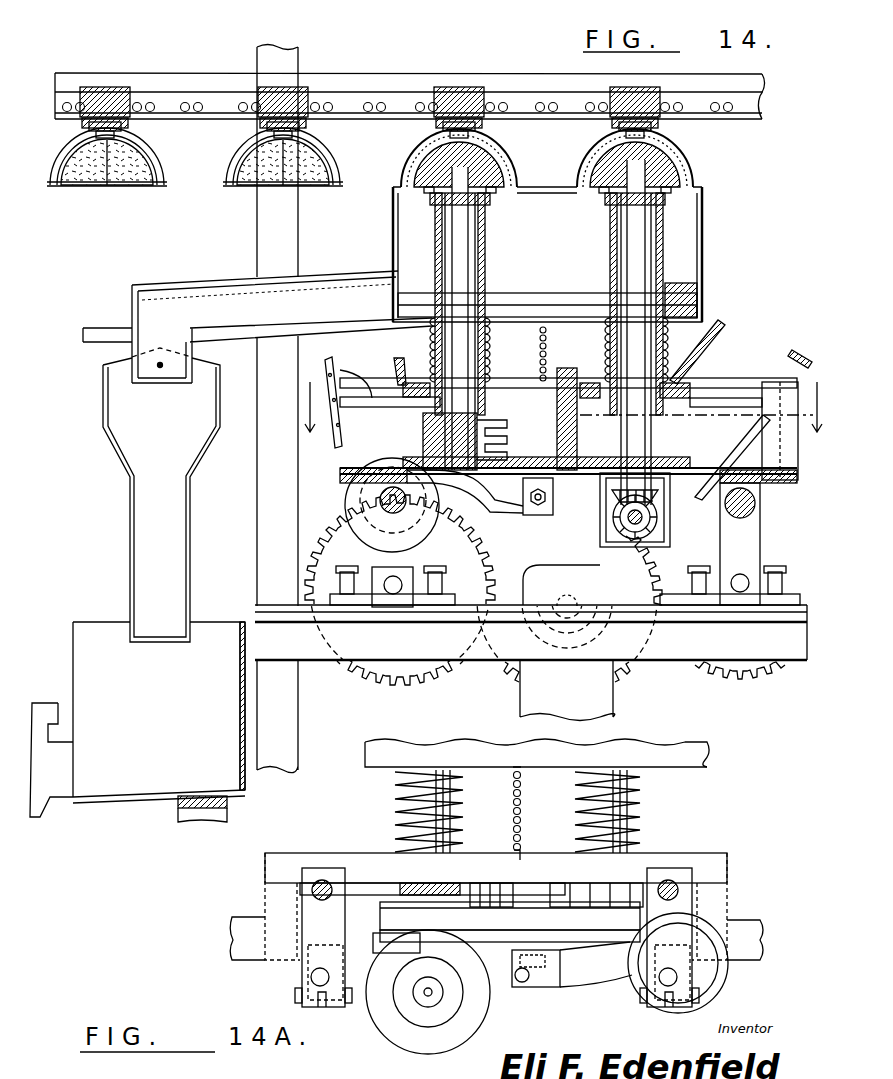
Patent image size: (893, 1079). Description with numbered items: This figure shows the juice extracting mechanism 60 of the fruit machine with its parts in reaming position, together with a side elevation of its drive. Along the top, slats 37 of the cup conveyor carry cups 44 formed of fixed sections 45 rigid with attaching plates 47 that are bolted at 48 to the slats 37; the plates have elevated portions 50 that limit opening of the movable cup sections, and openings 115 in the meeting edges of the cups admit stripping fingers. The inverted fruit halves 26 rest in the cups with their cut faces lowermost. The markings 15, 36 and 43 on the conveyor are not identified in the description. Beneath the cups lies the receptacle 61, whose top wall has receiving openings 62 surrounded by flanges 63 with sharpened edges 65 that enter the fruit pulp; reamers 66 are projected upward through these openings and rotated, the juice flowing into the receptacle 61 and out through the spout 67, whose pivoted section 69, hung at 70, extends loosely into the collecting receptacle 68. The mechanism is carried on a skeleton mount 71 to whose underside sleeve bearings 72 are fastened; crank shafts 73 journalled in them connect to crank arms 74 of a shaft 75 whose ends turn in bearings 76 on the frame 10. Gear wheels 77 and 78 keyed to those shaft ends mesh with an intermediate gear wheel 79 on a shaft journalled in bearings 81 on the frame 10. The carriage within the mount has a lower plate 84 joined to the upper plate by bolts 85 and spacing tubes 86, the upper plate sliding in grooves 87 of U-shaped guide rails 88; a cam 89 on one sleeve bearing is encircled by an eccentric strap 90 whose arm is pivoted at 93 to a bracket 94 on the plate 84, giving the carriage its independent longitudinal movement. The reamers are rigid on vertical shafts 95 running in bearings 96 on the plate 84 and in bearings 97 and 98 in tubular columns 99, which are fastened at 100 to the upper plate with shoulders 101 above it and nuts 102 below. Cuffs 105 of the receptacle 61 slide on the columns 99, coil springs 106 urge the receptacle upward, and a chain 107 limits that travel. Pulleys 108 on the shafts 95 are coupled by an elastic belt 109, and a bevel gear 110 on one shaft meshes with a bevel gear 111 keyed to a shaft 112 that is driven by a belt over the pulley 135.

In FIG. 14, the frame 10 is at (257, 548).
In FIG. 14A, the frame 10 is at (745, 960).
In FIG. 14, the direction of movement 15 is at (562, 398).
In FIG. 14, the fruit halves 26 is at (130, 190).
In FIG. 14, the conveyor chain 36 is at (400, 92).
In FIG. 14, the slats 37 is at (118, 88).
In FIG. 14, the conveyor rail 43 is at (765, 82).
In FIG. 14, the cups 44 is at (165, 190).
In FIG. 14, the fixed cup sections 45 is at (168, 190).
In FIG. 14, the attaching plates 47 is at (122, 128).
In FIG. 14, the bolt fastening 48 is at (128, 120).
In FIG. 14, the elevated portions 50 is at (96, 135).
In FIG. 14, the juice extracting mechanism 60 is at (393, 230).
In FIG. 14A, the juice extracting mechanism 60 is at (422, 745).
In FIG. 14, the receptacle 61 is at (704, 258).
In FIG. 14A, the receptacle 61 is at (670, 742).
In FIG. 14, the receiving openings 62 is at (704, 196).
In FIG. 14, the flanges 63 is at (414, 175).
In FIG. 14, the sharpened edges 65 is at (512, 178).
In FIG. 14, the reamers 66 is at (496, 198).
In FIG. 14, the spout 67 is at (505, 150).
In FIG. 14, the collecting receptacle 68 is at (414, 200).
In FIG. 14, the spout section 69 is at (130, 530).
In FIG. 14, the pivot 70 is at (160, 368).
In FIG. 14, the mount 71 is at (775, 395).
In FIG. 14, the sleeve bearings 72 is at (788, 491).
In FIG. 14A, the sleeve bearings 72 is at (300, 985).
In FIG. 14, the crank shafts 73 is at (340, 478).
In FIG. 14A, the crank shafts 73 is at (312, 977).
In FIG. 14, the crank arms 74 is at (760, 550).
In FIG. 14A, the crank arms 74 is at (302, 895).
In FIG. 14, the shaft 75 is at (393, 594).
In FIG. 14A, the shaft 75 is at (318, 880).
In FIG. 14, the bearings 76 is at (312, 580).
In FIG. 14, the gear wheel 77 is at (752, 680).
In FIG. 14, the gear wheel 78 is at (425, 676).
In FIG. 14, the intermediate gear wheel 79 is at (502, 675).
In FIG. 14, the bearings 81 is at (614, 700).
In FIG. 14, the lower plate 84 is at (515, 510).
In FIG. 14A, the lower plate 84 is at (385, 930).
In FIG. 14, the bolts 85 is at (568, 368).
In FIG. 14, the spacing tubes 86 is at (540, 380).
In FIG. 14A, the spacing tubes 86 is at (512, 845).
In FIG. 14, the grooves 87 is at (345, 360).
In FIG. 14A, the grooves 87 is at (287, 855).
In FIG. 14, the guide rails 88 is at (365, 372).
In FIG. 14, the cam 89 is at (345, 510).
In FIG. 14A, the cam 89 is at (720, 990).
In FIG. 14, the eccentric strap 90 is at (360, 498).
In FIG. 14A, the eccentric strap 90 is at (712, 925).
In FIG. 14A, the pivot 93 is at (525, 983).
In FIG. 14A, the bracket 94 is at (610, 985).
In FIG. 14, the vertical shafts 95 is at (648, 245).
In FIG. 14, the bearings 96 is at (403, 452).
In FIG. 14, the bearings 97 is at (486, 250).
In FIG. 14, the bearings 98 is at (700, 380).
In FIG. 14, the tubular columns 99 is at (435, 251).
In FIG. 14A, the tubular columns 99 is at (415, 788).
In FIG. 14, the fastening 100 is at (690, 398).
In FIG. 14, the shoulders 101 is at (400, 380).
In FIG. 14, the nuts 102 is at (510, 425).
In FIG. 14A, the nuts 102 is at (405, 880).
In FIG. 14, the cuffs 105 is at (490, 270).
In FIG. 14, the coil springs 106 is at (700, 300).
In FIG. 14A, the coil springs 106 is at (418, 806).
In FIG. 14, the chain 107 is at (540, 300).
In FIG. 14A, the chain 107 is at (522, 832).
In FIG. 14, the pulley 108 is at (423, 445).
In FIG. 14A, the pulley 108 is at (380, 880).
In FIG. 14A, the endless belt 109 is at (510, 916).
In FIG. 14, the bevel gear wheel 110 is at (680, 490).
In FIG. 14, the bevel gear wheel 111 is at (668, 520).
In FIG. 14, the shaft 112 is at (660, 520).
In FIG. 14A, the shaft 112 is at (440, 995).
In FIG. 14, the openings 115 is at (55, 168).
In FIG. 14A, the pulley 135 is at (394, 1045).